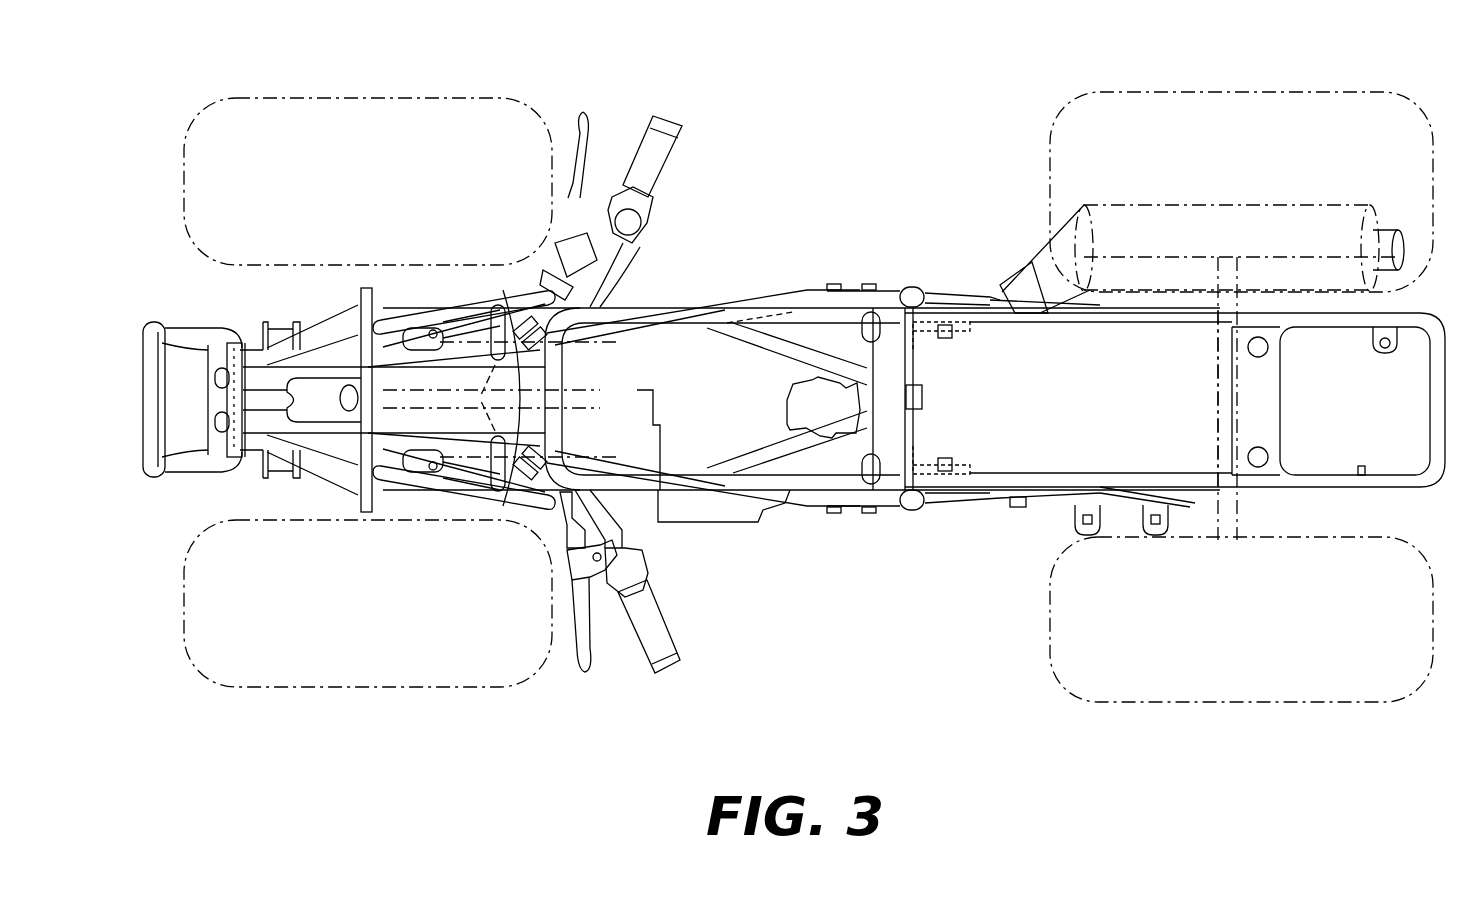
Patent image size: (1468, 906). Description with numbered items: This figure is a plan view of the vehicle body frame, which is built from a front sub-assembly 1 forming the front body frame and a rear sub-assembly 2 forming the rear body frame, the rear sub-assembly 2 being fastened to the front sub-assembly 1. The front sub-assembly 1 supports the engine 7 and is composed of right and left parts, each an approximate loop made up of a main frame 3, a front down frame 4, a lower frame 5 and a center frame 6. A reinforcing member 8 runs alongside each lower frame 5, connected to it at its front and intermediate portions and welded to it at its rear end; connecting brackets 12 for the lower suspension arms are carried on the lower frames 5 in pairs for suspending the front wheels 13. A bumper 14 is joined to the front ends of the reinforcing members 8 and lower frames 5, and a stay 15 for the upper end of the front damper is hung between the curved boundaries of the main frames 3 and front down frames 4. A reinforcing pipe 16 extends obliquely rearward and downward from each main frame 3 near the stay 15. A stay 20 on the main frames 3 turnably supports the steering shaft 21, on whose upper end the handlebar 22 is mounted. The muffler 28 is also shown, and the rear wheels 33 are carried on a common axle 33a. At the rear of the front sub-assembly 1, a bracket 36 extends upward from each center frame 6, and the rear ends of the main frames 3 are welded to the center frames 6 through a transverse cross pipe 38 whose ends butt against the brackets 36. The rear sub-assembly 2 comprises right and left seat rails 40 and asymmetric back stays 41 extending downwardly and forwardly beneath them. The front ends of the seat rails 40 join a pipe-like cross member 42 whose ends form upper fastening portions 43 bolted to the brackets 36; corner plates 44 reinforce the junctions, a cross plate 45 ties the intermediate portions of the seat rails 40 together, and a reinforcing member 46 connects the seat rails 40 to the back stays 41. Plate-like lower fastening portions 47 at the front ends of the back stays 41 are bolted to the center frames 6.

The front sub-assembly 1 is at (742, 212).
The rear sub-assembly 2 is at (987, 610).
The main frame 3 is at (600, 325).
The front down frame 4 is at (318, 340).
The lower frame 5 is at (662, 335).
The center frame 6 is at (895, 290).
The engine 7 is at (745, 525).
The reinforcing member 8 is at (352, 318).
The connecting bracket 12 is at (275, 322).
The front wheel 13 is at (383, 98).
The bumper 14 is at (148, 322).
The stay 15 is at (367, 288).
The reinforcing pipe 16 is at (455, 328).
The stay 20 is at (500, 478).
The steering shaft 21 is at (497, 305).
The handlebar 22 is at (575, 395).
The muffler 28 is at (1235, 205).
The rear wheel 33 is at (1058, 132).
The common axle 33a is at (1218, 405).
The bracket 36 is at (870, 290).
The cross pipe 38 is at (815, 388).
The seat rail 40 is at (1090, 325).
The back stay 41 is at (990, 300).
The cross member 42 is at (930, 410).
The upper fastening portion 43 is at (920, 303).
The corner plate 44 is at (942, 338).
The cross plate 45 is at (1295, 398).
The reinforcing member 46 is at (1168, 535).
The lower fastening portion 47 is at (950, 297).